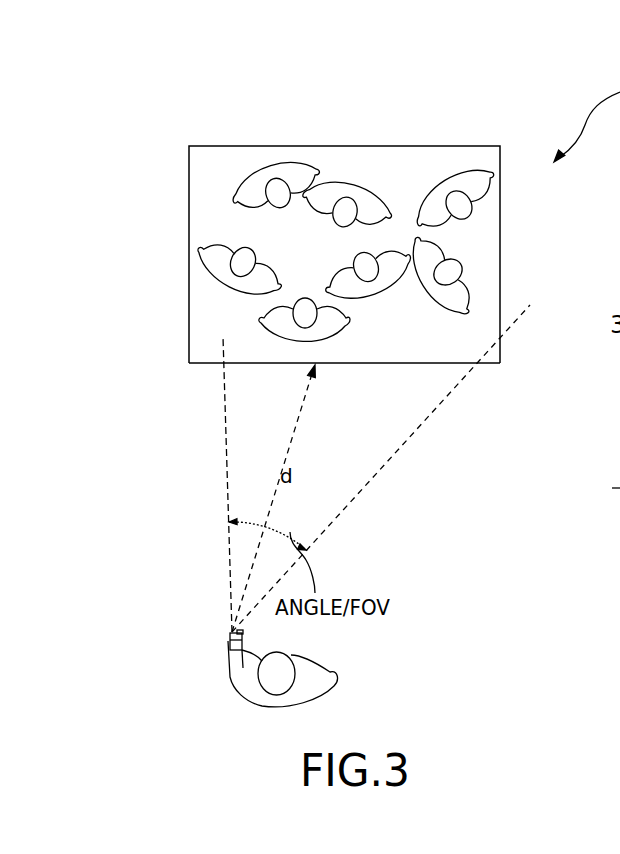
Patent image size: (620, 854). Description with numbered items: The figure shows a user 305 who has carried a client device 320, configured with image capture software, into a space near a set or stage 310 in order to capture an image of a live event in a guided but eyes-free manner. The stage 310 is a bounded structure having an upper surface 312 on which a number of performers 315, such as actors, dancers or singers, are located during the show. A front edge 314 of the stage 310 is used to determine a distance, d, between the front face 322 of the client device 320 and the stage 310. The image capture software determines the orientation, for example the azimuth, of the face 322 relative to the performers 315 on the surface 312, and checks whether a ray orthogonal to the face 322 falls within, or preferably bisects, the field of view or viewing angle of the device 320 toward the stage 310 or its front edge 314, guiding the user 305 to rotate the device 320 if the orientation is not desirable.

The user 305 is at (266, 707).
The set or stage 310 is at (331, 144).
The upper surface 312 is at (392, 164).
The front edge 314 is at (363, 364).
The performers 315 is at (466, 284).
The client device 320 is at (214, 635).
The front face 322 is at (245, 633).